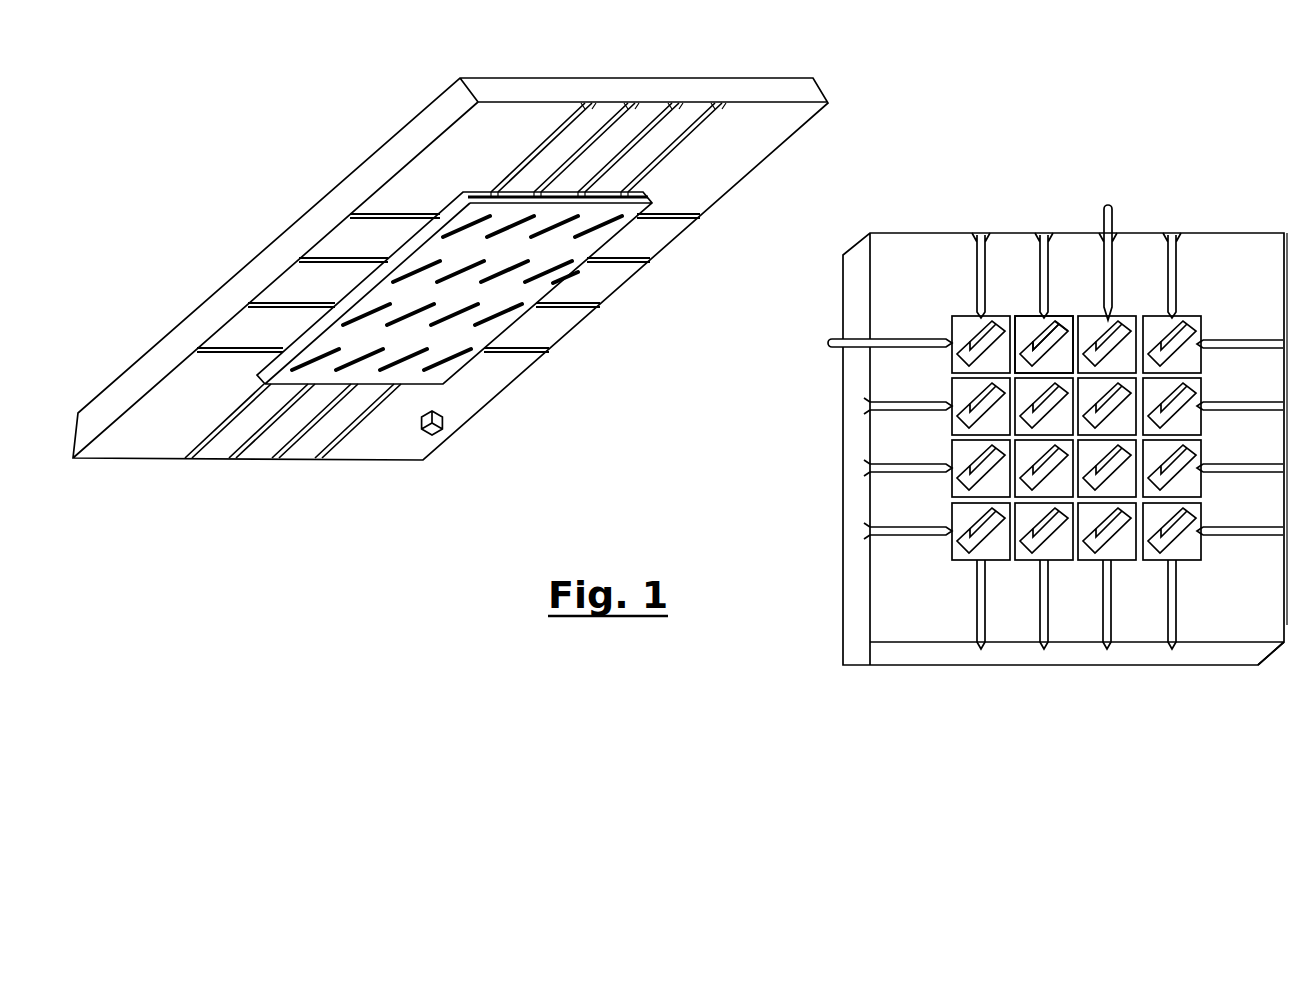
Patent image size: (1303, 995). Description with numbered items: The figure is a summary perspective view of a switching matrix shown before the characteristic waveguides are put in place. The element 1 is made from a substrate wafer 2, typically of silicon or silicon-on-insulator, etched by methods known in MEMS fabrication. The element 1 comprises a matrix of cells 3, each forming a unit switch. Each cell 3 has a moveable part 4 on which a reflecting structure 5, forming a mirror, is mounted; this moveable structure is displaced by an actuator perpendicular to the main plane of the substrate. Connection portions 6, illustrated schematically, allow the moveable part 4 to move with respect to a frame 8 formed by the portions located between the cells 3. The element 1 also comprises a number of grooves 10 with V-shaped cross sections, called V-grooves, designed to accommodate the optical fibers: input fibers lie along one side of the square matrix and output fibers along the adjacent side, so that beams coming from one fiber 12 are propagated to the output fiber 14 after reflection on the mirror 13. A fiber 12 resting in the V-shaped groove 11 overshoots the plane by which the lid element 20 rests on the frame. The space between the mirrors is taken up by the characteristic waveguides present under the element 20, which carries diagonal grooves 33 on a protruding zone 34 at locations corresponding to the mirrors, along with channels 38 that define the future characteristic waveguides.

The element 1 is at (917, 257).
The substrate wafer 2 is at (921, 652).
The cell 3 is at (1025, 323).
The moveable part 4 is at (1068, 323).
The reflecting structure 5 is at (1052, 322).
The connection portions 6 is at (1080, 556).
The frame 8 is at (995, 560).
The grooves 10 is at (1180, 262).
The V-shaped groove 11 is at (887, 535).
The fiber 12 is at (1113, 216).
The mirror 13 is at (1120, 327).
The output fiber 14 is at (890, 348).
The element 20 is at (261, 447).
The diagonal grooves 33 is at (562, 268).
The protruding zone 34 is at (508, 194).
The channels 38 is at (382, 261).